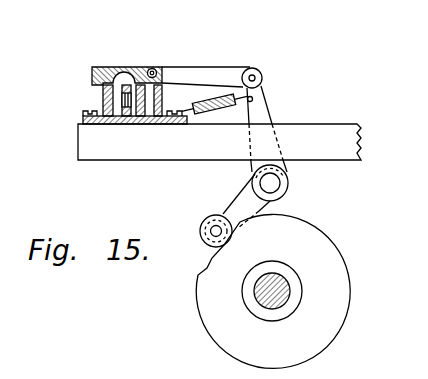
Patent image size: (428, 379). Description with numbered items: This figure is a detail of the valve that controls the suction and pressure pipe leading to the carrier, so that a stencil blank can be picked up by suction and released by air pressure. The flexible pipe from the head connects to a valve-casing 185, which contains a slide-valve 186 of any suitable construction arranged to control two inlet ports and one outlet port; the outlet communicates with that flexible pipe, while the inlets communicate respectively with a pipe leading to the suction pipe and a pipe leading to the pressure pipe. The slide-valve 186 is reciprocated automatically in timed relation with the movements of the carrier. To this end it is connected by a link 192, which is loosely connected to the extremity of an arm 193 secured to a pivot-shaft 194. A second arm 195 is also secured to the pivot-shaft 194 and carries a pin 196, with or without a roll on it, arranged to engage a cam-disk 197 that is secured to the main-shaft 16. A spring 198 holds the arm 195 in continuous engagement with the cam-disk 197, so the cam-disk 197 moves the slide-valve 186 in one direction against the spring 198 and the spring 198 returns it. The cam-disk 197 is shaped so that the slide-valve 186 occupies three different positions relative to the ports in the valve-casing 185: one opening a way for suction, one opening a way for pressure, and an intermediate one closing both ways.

The main-shaft 16 is at (289, 287).
The valve-casing 185 is at (103, 100).
The slide-valve 186 is at (100, 66).
The link 192 is at (217, 72).
The arm 193 is at (261, 115).
The pivot-shaft 194 is at (272, 183).
The arm 195 is at (233, 198).
The pin 196 is at (208, 228).
The cam-disk 197 is at (201, 322).
The spring 198 is at (212, 110).